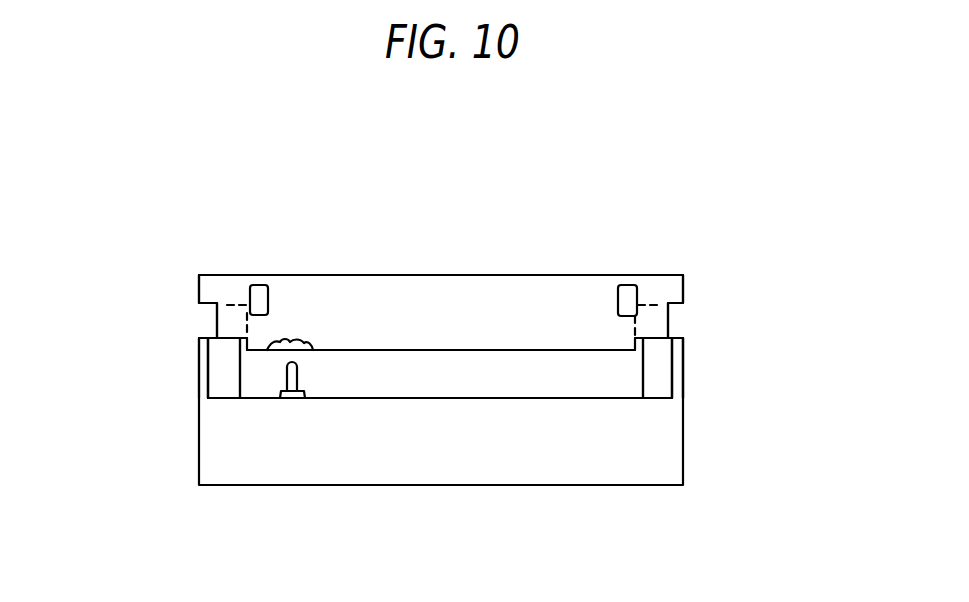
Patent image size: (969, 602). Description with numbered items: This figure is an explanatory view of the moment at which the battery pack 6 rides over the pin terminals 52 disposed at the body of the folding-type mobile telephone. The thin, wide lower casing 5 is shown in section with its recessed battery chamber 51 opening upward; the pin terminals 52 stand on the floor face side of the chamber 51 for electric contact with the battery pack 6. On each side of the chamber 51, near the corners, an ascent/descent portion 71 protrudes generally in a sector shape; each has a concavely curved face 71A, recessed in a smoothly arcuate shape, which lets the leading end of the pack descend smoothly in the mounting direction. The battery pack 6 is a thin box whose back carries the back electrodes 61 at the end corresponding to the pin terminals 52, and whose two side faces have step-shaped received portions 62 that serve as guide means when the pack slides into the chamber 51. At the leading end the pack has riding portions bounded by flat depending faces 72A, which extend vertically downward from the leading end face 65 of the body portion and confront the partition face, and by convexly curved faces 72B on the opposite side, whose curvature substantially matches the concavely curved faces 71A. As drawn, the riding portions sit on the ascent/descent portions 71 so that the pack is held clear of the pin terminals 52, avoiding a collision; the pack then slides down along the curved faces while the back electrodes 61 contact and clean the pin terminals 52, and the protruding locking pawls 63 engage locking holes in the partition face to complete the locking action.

The lower casing 5 is at (500, 450).
The battery pack 6 is at (461, 275).
The battery chamber 51 is at (686, 332).
The pin terminals 52 is at (305, 372).
The back electrodes 61 is at (290, 340).
The received portions 62 is at (203, 305).
The locking pawls 63 is at (262, 285).
The leading end face 65 is at (517, 305).
The ascent/descent portions 71 is at (217, 363).
The concavely curved face 71A is at (434, 420).
The depending faces 72A is at (205, 334).
The convexly curved faces 72B is at (228, 317).